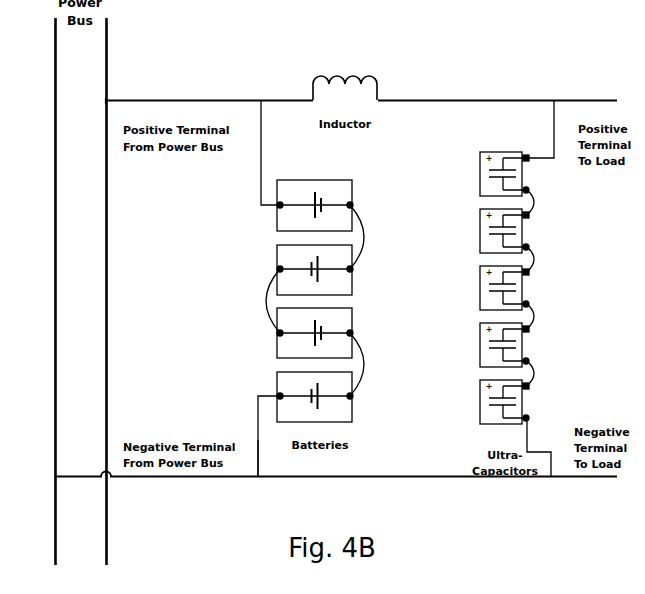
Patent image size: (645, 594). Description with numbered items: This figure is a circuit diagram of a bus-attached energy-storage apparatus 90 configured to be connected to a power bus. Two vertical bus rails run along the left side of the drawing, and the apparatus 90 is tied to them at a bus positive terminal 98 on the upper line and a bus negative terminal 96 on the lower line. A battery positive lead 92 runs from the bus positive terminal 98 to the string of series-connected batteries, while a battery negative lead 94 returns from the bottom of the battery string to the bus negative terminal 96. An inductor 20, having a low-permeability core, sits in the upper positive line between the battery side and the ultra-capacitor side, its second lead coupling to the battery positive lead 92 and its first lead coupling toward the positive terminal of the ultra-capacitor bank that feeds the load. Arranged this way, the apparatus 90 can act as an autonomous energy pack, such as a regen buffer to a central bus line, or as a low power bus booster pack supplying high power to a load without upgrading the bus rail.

The inductor 20 is at (373, 80).
The bus-attached energy-storage apparatus 90 is at (172, 81).
The battery positive lead 92 is at (262, 164).
The battery negative lead 94 is at (258, 443).
The bus negative terminal 96 is at (55, 484).
The bus positive terminal 98 is at (106, 105).